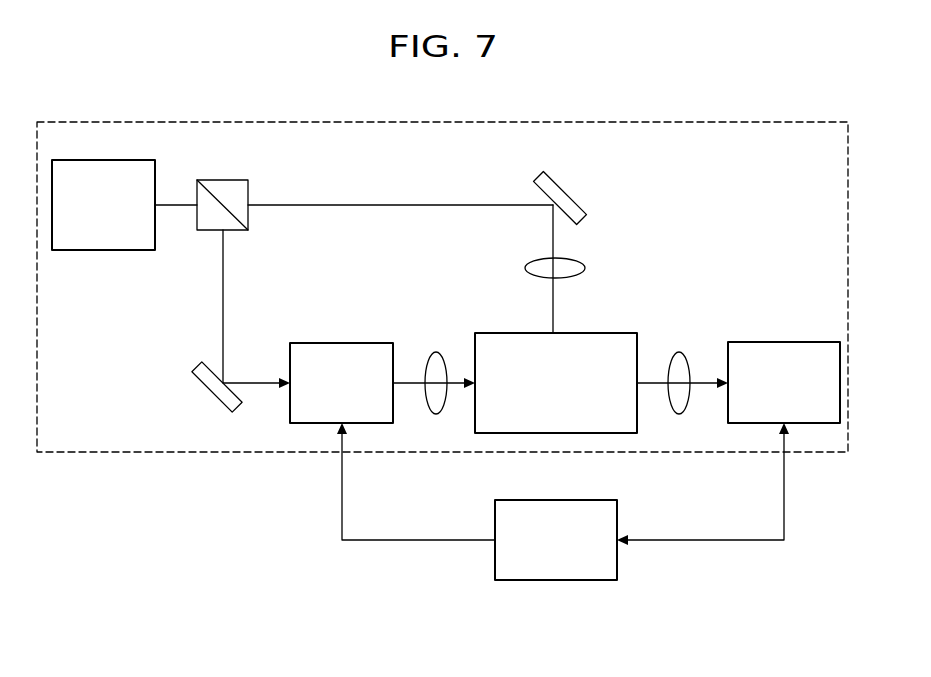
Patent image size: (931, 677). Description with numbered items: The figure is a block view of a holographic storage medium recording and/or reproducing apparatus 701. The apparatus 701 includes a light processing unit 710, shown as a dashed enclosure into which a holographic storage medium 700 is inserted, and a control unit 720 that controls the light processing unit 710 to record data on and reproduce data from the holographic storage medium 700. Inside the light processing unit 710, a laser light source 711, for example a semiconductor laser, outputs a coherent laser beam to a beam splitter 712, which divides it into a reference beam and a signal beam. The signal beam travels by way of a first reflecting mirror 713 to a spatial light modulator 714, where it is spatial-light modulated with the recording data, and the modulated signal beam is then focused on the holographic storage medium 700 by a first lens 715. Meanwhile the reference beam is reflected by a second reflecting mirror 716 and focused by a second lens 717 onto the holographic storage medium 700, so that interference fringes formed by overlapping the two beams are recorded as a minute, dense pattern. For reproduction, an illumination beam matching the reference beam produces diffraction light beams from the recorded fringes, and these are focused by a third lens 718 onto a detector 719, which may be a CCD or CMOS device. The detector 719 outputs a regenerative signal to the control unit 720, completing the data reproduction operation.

The holographic storage medium 700 is at (577, 332).
The holographic storage medium recording and/or reproducing apparatus 701 is at (303, 579).
The light processing unit 710 is at (138, 455).
The laser light source 711 is at (108, 158).
The beam splitter 712 is at (227, 178).
The first reflecting mirror 713 is at (210, 395).
The spatial light modulator (SLM) 714 is at (342, 340).
The first lens 715 is at (436, 350).
The second reflecting mirror 716 is at (567, 192).
The second lens 717 is at (586, 268).
The third lens 718 is at (679, 350).
The detector 719 is at (784, 340).
The control unit 720 is at (555, 500).